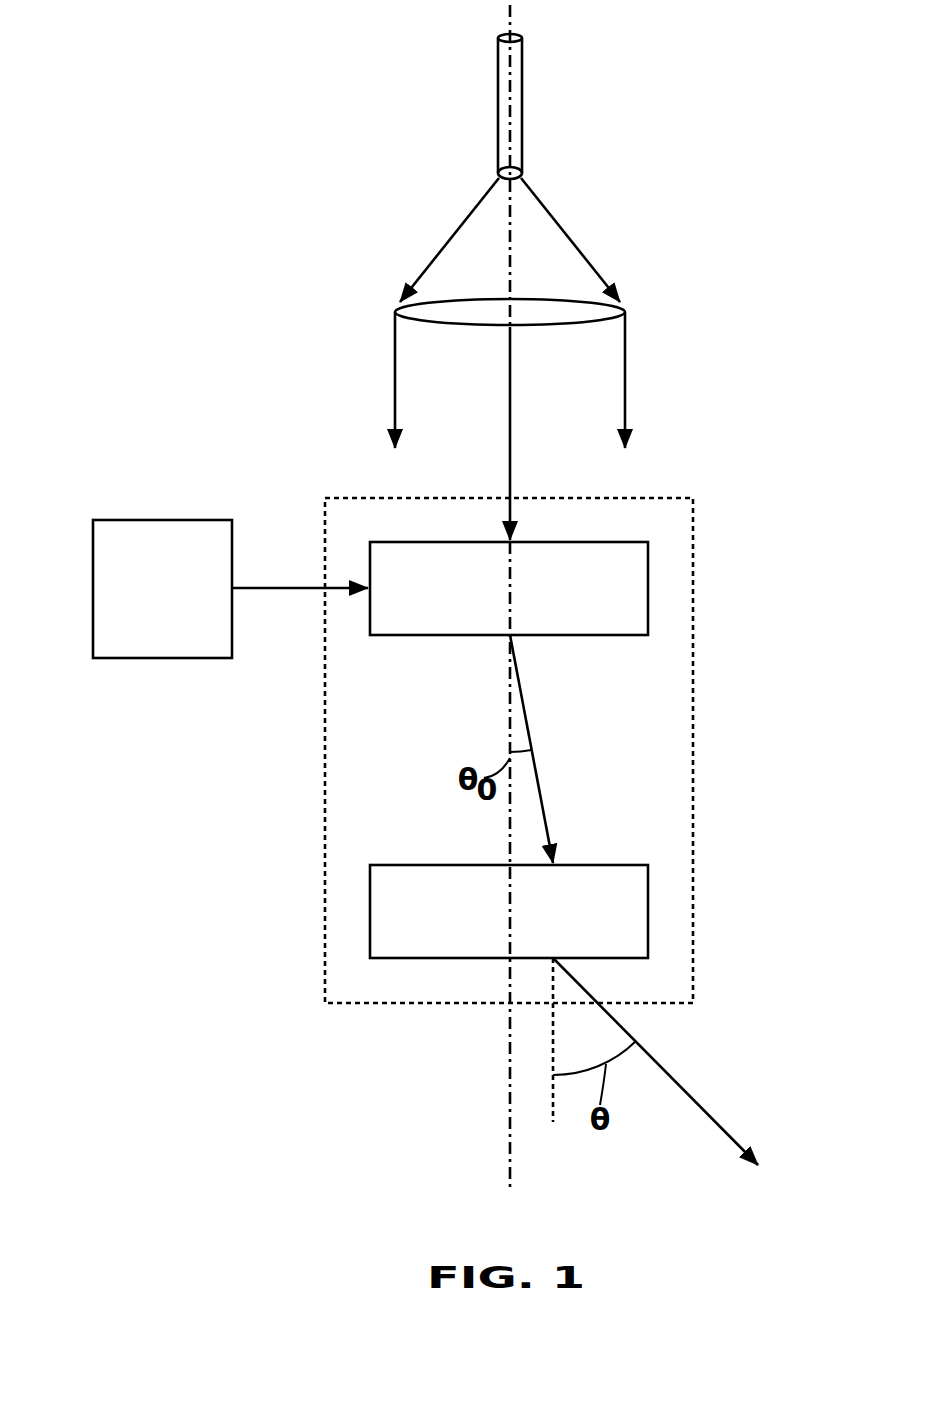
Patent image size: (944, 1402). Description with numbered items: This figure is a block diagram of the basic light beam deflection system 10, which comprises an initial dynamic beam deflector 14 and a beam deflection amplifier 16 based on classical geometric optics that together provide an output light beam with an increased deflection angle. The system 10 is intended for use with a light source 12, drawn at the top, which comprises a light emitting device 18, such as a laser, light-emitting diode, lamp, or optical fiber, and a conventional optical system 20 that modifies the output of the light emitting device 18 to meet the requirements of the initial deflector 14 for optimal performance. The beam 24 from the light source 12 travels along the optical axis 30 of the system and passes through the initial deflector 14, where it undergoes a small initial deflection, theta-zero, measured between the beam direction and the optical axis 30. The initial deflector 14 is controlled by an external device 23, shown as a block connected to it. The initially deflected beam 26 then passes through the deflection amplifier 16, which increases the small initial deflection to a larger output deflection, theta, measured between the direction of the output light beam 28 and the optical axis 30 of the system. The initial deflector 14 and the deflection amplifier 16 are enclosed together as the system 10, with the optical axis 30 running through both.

The light beam deflection system 10 is at (703, 543).
The light source 12 is at (412, 224).
The initial dynamic beam deflector 14 is at (603, 542).
The beam deflection amplifier 16 is at (620, 866).
The light emitting device 18 is at (523, 130).
The conventional optical system 20 is at (624, 312).
The external device 23 is at (230, 589).
The beam 24 is at (512, 432).
The initially deflected beam 26 is at (545, 810).
The output light beam 28 is at (690, 1095).
The optical axis 30 is at (507, 1122).